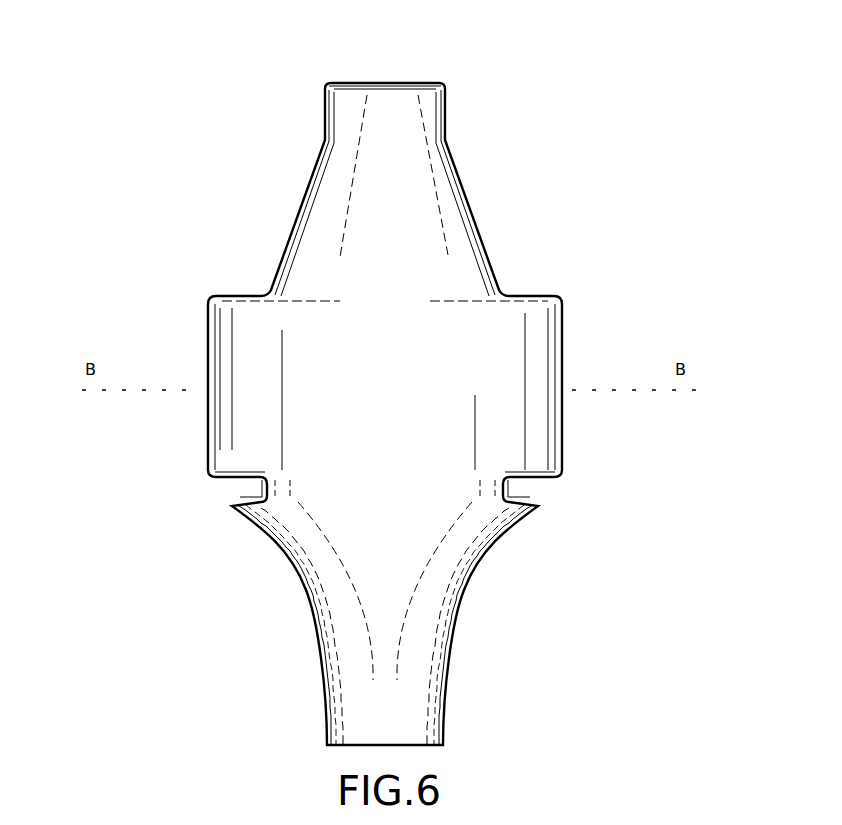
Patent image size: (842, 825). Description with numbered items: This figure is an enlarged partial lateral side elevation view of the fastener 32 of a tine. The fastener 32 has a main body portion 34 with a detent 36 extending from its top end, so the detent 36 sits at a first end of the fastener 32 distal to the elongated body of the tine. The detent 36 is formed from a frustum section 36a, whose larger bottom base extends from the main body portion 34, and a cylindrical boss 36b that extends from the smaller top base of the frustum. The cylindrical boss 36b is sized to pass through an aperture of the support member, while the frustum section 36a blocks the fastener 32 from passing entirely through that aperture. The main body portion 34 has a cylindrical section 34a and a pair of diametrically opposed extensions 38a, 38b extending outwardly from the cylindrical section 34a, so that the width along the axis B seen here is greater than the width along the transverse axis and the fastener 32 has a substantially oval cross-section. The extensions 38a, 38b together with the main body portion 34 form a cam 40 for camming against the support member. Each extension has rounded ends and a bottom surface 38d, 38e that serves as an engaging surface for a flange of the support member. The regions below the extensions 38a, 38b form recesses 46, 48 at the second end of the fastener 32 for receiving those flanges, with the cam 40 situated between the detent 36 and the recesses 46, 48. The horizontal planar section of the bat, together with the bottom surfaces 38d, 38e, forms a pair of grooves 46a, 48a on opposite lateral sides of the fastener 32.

The fastener 32 is at (414, 399).
The main body portion 34 is at (414, 499).
The cylindrical section 34a is at (395, 428).
The detent 36 is at (327, 174).
The frustum section 36a is at (278, 268).
The cylindrical boss 36b is at (325, 112).
The extension 38a is at (565, 345).
The extension 38b is at (208, 355).
The bottom surface 38d is at (548, 482).
The bottom surface 38e is at (226, 491).
The cam 40 is at (580, 444).
The recess 46 is at (560, 493).
The groove 46a is at (553, 506).
The recess 48 is at (230, 493).
The groove 48a is at (218, 506).